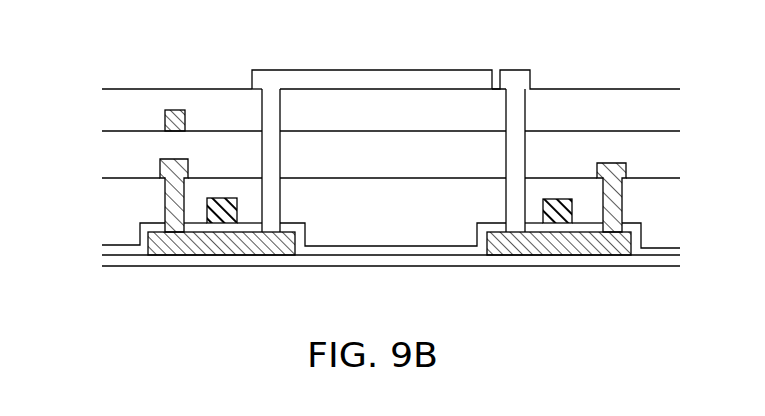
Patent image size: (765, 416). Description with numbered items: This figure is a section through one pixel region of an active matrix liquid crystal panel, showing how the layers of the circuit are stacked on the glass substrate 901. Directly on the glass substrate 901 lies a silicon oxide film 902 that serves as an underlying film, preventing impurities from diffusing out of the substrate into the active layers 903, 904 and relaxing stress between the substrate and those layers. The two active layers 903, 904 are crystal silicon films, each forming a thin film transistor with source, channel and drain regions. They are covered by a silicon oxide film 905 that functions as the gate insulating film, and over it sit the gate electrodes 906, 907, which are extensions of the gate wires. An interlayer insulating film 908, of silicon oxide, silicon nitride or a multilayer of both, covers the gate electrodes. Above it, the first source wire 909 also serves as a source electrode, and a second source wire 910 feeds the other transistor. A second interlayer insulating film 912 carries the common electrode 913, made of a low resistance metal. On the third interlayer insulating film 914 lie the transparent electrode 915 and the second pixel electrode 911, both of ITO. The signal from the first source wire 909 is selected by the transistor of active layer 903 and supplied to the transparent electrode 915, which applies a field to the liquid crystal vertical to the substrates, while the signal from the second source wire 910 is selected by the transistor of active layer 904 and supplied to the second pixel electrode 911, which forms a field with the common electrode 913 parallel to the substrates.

The glass substrate 901 is at (123, 310).
The silicon oxide film 902 is at (138, 258).
The active layer 903 is at (190, 252).
The active layer 904 is at (517, 257).
The silicon oxide film 905 is at (137, 230).
The gate electrode 906 is at (222, 217).
The gate electrode 907 is at (548, 207).
The interlayer insulating film 908 is at (130, 195).
The first source wire 909 is at (170, 160).
The second source wire 910 is at (617, 166).
The second pixel electrode 911 is at (517, 197).
The second interlayer insulating film 912 is at (122, 145).
The common electrode 913 is at (176, 112).
The third interlayer insulating film 914 is at (123, 100).
The transparent electrode 915 is at (403, 82).